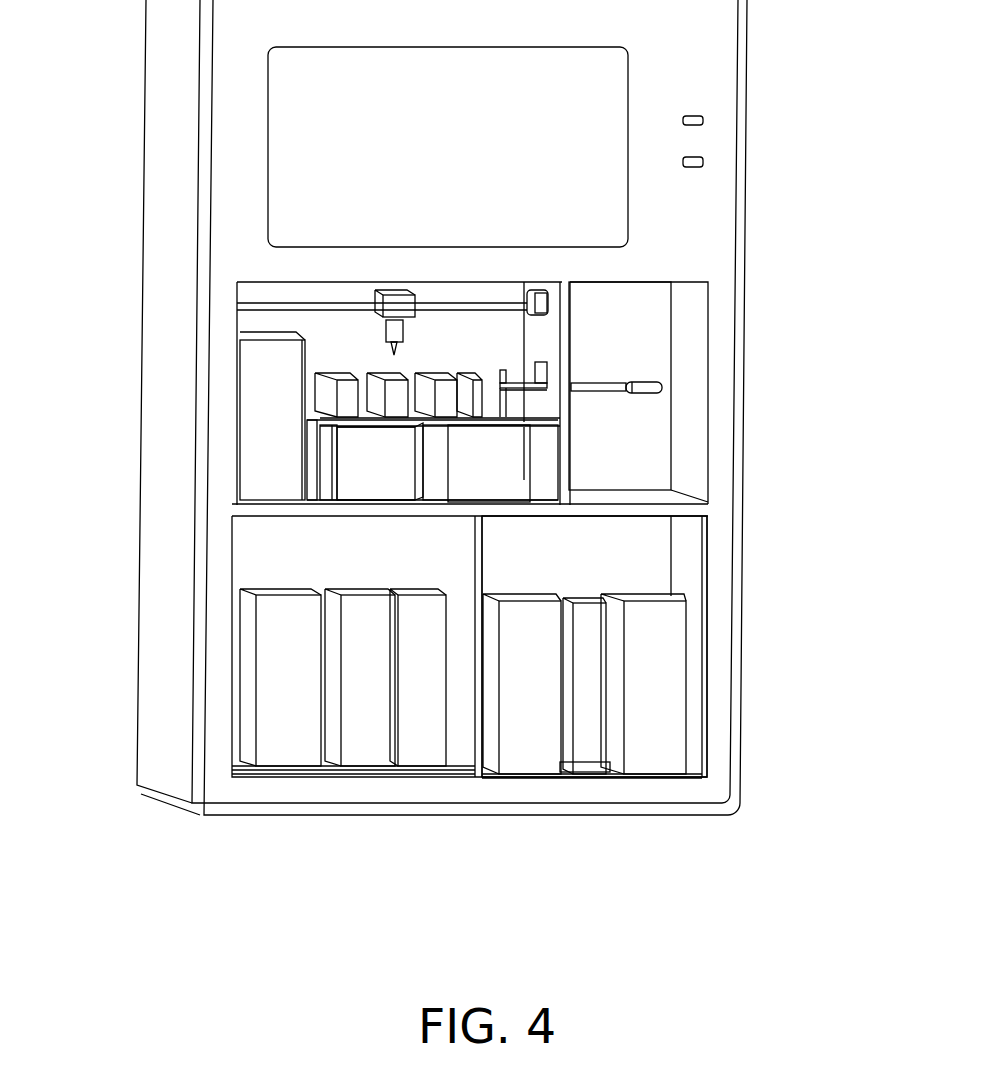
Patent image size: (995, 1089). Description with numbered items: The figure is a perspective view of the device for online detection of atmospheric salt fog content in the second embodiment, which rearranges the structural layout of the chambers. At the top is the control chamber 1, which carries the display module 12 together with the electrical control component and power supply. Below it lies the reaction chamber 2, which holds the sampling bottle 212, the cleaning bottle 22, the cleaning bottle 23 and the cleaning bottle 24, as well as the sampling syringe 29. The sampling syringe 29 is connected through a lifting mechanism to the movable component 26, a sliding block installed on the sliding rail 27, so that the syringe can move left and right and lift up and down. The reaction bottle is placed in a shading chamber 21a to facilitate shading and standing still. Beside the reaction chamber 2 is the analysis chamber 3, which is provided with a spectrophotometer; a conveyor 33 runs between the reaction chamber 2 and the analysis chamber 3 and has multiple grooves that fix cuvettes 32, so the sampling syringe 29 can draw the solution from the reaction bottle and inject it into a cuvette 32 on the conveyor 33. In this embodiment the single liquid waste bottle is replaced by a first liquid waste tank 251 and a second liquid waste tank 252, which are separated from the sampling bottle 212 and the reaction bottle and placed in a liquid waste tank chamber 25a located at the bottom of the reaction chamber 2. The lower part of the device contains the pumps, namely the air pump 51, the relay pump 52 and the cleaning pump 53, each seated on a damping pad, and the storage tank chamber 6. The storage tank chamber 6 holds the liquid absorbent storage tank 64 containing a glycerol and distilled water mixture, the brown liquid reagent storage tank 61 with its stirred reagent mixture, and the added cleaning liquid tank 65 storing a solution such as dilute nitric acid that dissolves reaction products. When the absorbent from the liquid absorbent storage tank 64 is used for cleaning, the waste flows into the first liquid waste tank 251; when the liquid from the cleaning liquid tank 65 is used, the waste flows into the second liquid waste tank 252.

The control chamber 1 is at (717, 80).
The display module 12 is at (290, 125).
The reaction chamber 2 is at (237, 328).
The sampling bottle 212 is at (260, 377).
The sliding rail 27 is at (268, 303).
The movable component 26 is at (385, 296).
The sampling syringe 29 is at (400, 345).
The shading chamber 21a is at (497, 398).
The cleaning bottle 24 is at (500, 406).
The cuvette 32 is at (507, 377).
The conveyor 33 is at (587, 385).
The analysis chamber 3 is at (708, 340).
The cleaning bottle 22 is at (307, 423).
The cleaning bottle 23 is at (377, 422).
The second liquid waste tank 252 is at (365, 470).
The first liquid waste tank 251 is at (503, 470).
The liquid waste tank chamber 25a is at (417, 492).
The storage tank chamber 6 is at (707, 673).
The air pump 51 is at (285, 743).
The relay pump 52 is at (358, 742).
The cleaning pump 53 is at (422, 743).
The liquid absorbent storage tank 64 is at (537, 738).
The liquid reagent storage tank 61 is at (592, 738).
The cleaning liquid tank 65 is at (662, 740).